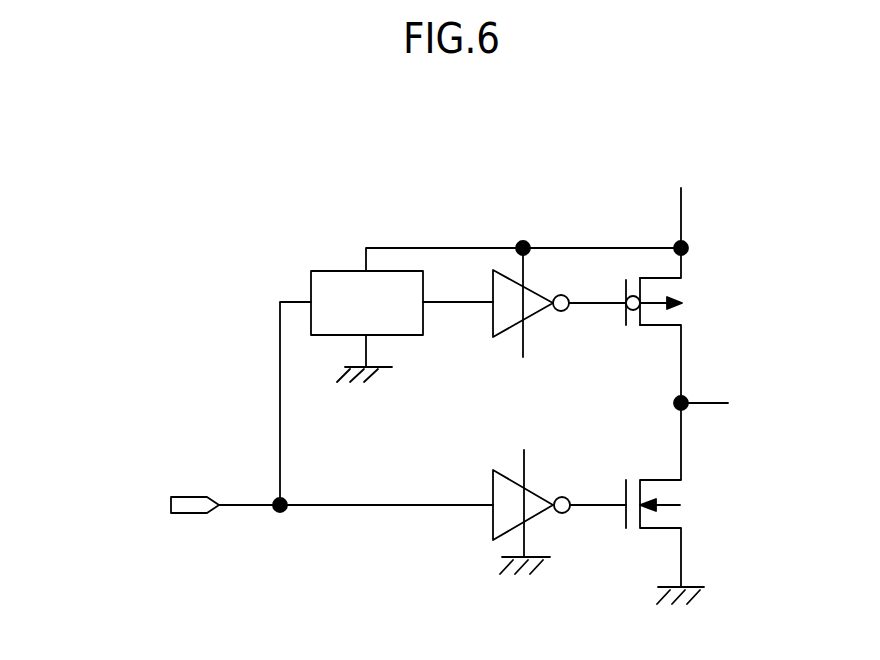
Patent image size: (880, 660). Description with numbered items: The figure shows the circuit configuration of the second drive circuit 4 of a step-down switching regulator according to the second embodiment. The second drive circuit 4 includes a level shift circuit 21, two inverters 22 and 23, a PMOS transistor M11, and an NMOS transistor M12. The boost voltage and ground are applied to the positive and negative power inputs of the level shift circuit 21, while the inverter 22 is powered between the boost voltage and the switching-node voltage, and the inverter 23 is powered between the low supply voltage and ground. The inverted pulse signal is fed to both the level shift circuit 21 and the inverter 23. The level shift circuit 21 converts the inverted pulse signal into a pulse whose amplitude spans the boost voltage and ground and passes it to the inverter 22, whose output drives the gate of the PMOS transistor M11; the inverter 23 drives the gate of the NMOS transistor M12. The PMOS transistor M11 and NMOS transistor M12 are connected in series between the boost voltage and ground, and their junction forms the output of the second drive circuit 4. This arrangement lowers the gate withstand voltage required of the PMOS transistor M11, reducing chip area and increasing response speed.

The second drive circuit 4 is at (578, 110).
The level shift circuit 21 is at (337, 270).
The inverter 22 is at (533, 315).
The inverter 23 is at (493, 522).
The PMOS transistor M11 is at (685, 340).
The NMOS transistor M12 is at (686, 503).